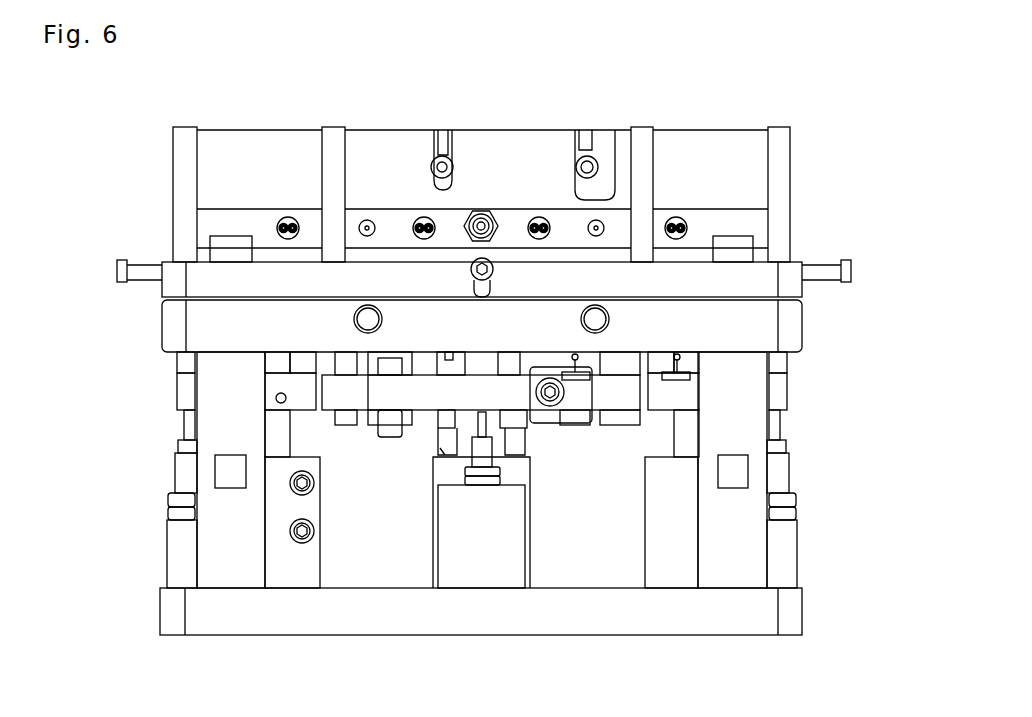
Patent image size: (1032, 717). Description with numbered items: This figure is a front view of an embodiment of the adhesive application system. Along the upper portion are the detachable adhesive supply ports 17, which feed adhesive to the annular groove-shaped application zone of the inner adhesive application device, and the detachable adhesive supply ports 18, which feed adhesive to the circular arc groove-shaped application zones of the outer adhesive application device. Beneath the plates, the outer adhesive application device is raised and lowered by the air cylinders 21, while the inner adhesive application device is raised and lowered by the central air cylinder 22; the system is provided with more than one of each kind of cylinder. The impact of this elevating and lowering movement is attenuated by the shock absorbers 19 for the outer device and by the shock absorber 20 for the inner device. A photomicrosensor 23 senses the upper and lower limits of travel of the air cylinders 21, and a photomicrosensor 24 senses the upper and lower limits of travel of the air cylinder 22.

The adhesive supply ports 17 is at (452, 168).
The adhesive supply ports 18 is at (487, 259).
The shock absorbers 19 is at (168, 498).
The shock absorber 20 is at (463, 472).
The air cylinders 21 is at (296, 560).
The air cylinder 22 is at (518, 470).
The photomicrosensor 23 is at (687, 356).
The photomicrosensor 24 is at (578, 363).